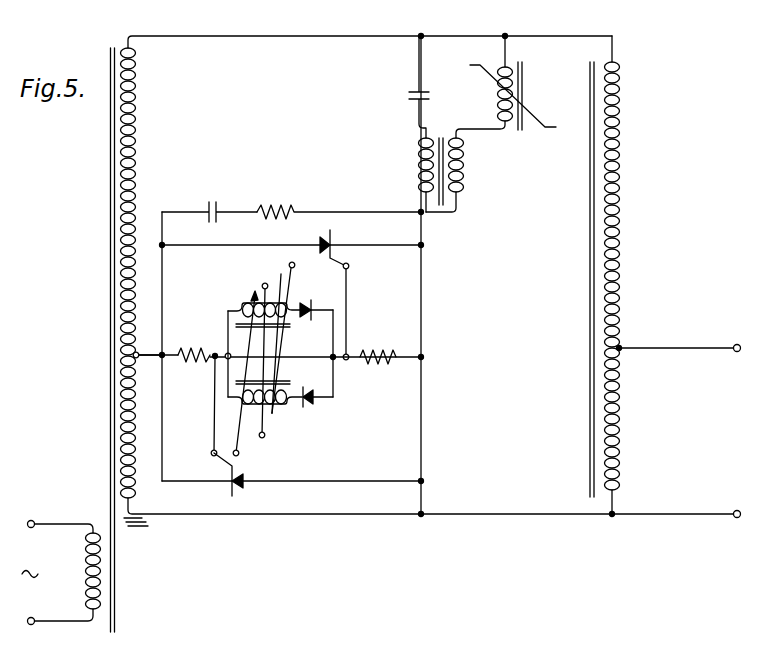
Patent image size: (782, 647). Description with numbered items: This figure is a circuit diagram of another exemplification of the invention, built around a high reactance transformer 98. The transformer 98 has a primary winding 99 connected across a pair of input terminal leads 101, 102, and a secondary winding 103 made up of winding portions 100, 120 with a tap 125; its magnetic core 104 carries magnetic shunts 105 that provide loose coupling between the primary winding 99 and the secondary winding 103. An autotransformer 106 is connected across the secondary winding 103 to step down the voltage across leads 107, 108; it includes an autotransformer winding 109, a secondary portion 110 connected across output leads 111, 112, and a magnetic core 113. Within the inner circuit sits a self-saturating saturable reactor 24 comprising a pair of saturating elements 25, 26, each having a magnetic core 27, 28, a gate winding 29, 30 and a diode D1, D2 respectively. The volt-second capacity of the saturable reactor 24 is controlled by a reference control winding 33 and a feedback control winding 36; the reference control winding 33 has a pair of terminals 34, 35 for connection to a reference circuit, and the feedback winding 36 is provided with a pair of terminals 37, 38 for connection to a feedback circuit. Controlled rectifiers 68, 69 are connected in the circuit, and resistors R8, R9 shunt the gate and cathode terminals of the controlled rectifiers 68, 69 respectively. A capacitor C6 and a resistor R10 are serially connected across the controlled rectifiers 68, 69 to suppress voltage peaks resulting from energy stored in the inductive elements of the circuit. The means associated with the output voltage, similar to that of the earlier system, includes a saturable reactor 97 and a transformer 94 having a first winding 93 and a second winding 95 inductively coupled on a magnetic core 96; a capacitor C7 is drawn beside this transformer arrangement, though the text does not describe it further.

The high reactance transformer 98 is at (113, 43).
The secondary winding 103 is at (139, 114).
The winding portion 120 is at (137, 164).
The tap 125 is at (139, 352).
The magnetic core 104 is at (108, 396).
The winding portion 100 is at (142, 440).
The magnetic shunts 105 is at (140, 526).
The primary winding 99 is at (86, 570).
The input terminal lead 101 is at (52, 523).
The input terminal lead 102 is at (50, 622).
The capacitor C6 is at (209, 201).
The capacitor C7 is at (431, 95).
The resistor R8 is at (180, 350).
The resistor R9 is at (379, 353).
The resistor R10 is at (273, 205).
The diode D1 is at (312, 306).
The diode D2 is at (315, 394).
The controlled rectifier 68 is at (340, 243).
The controlled rectifier 69 is at (245, 483).
The self-saturating saturable reactor 24 is at (269, 357).
The saturating element 25 is at (237, 301).
The saturating element 26 is at (238, 401).
The magnetic core 27 is at (288, 326).
The magnetic core 28 is at (284, 380).
The gate winding 29 is at (276, 336).
The gate winding 30 is at (277, 405).
The reference control winding 33 is at (247, 355).
The terminal 34 is at (239, 454).
The terminal 35 is at (265, 436).
The feedback control winding 36 is at (280, 356).
The terminal 37 is at (265, 283).
The terminal 38 is at (295, 266).
The first winding 93 is at (418, 168).
The transformer 94 is at (444, 133).
The second winding 95 is at (466, 160).
The magnetic core 96 is at (441, 206).
The saturable reactor 97 is at (527, 100).
The autotransformer 106 is at (672, 78).
The lead 107 is at (568, 36).
The lead 108 is at (515, 511).
The autotransformer winding 109 is at (622, 242).
The secondary portion 110 is at (620, 435).
The output lead 111 is at (700, 348).
The output lead 112 is at (694, 514).
The magnetic core 113 is at (590, 371).